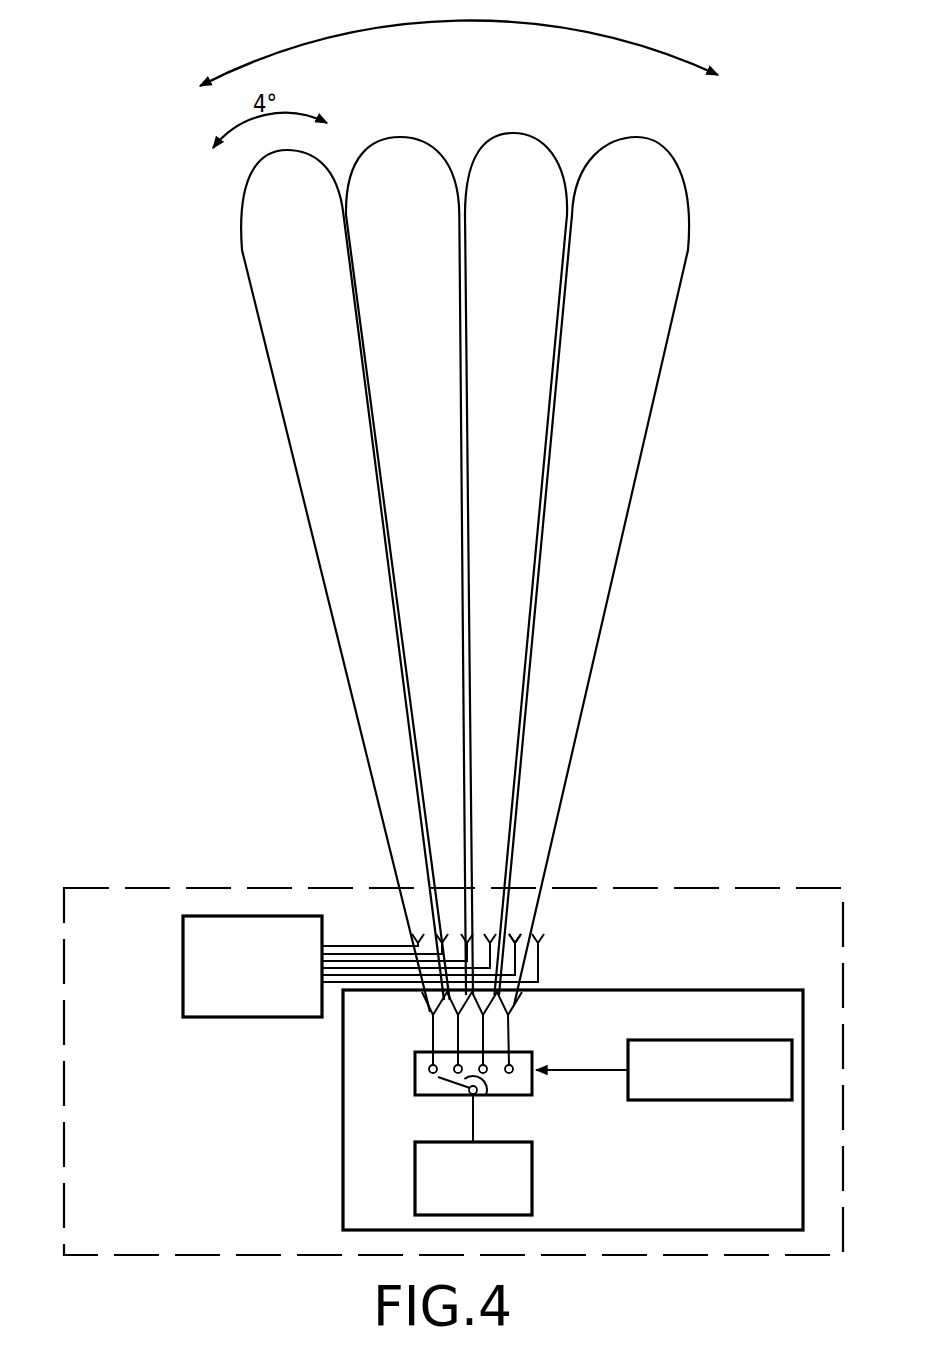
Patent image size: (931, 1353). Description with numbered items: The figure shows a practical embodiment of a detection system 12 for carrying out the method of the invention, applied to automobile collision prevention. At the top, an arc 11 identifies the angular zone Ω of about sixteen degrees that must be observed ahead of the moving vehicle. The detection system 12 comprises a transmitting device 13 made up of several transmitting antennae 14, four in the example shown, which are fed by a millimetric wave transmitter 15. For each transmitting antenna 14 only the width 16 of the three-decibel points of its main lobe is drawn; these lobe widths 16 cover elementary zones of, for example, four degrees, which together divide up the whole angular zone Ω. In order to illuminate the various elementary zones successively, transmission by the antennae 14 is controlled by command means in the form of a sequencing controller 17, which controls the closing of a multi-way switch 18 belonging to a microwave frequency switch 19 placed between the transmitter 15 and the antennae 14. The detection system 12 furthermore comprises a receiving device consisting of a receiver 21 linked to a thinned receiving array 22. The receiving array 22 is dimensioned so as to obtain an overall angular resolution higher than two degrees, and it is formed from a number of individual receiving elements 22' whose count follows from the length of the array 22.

The arc 11 is at (288, 50).
The detection system 12 is at (120, 882).
The transmitting device 13 is at (700, 989).
The transmitting antennae 14 is at (423, 1000).
The millimetric wave transmitter 15 is at (533, 1158).
The width of the 3 dB points of the main lobe 16 is at (322, 605).
The sequencing controller 17 is at (718, 1100).
The multi-way switch 18 is at (487, 1094).
The microwave frequency switch 19 is at (415, 1080).
The receiver 21 is at (183, 957).
The thinned receiving array 22 is at (490, 946).
The receiving elements 22' is at (556, 915).